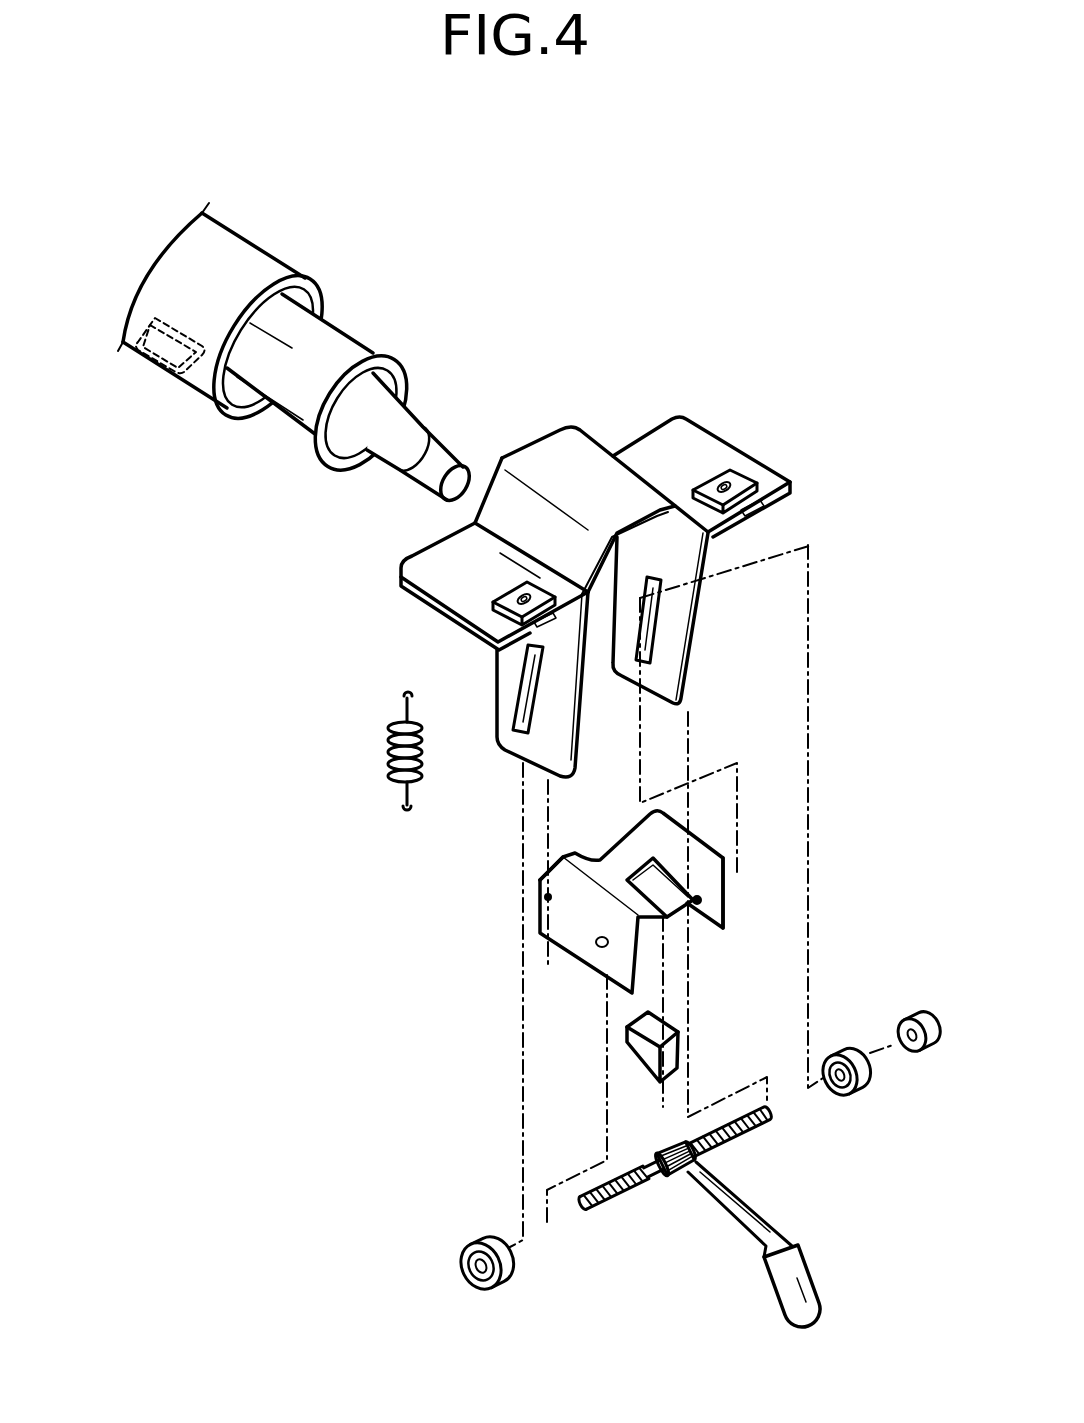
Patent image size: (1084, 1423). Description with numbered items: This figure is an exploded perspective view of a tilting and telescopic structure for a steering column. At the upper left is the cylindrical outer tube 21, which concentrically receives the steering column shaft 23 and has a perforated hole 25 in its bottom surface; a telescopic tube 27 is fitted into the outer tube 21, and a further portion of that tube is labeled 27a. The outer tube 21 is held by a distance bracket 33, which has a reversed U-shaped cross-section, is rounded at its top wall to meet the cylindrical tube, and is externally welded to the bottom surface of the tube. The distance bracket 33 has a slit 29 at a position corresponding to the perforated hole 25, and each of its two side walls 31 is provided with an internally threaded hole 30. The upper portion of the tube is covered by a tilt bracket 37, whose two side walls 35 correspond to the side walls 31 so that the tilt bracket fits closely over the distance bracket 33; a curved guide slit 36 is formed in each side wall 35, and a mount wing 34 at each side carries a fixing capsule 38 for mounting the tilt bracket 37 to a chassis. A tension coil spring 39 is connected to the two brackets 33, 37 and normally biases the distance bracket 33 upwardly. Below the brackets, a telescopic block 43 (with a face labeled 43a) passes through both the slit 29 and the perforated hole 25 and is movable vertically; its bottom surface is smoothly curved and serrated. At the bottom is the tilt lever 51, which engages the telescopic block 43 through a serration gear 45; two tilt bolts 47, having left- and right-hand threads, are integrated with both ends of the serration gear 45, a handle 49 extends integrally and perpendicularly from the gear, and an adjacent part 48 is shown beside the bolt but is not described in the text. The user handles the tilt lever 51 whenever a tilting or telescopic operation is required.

The outer tube 21 is at (253, 255).
The steering column shaft 23 is at (434, 448).
The perforated hole 25 is at (163, 350).
The telescopic tube 27 is at (283, 418).
The tube end ring 27a is at (310, 460).
The slit 29 is at (668, 878).
The internally threaded hole 30 is at (700, 901).
The side walls 31 is at (723, 922).
The distance bracket 33 is at (692, 815).
The mount wing 34 is at (697, 428).
The side walls 35 is at (513, 745).
The curved guide slit 36 is at (530, 695).
The tilt bracket 37 is at (622, 395).
The fixing capsule 38 is at (750, 482).
The tension coil spring 39 is at (385, 747).
The telescopic block 43 is at (702, 1022).
The block top face 43a is at (672, 1033).
The serration gear 45 is at (693, 1167).
The tilt bolts 47 is at (653, 1173).
The nut 48 is at (470, 1244).
The handle 49 is at (810, 1268).
The tilt lever 51 is at (755, 1233).